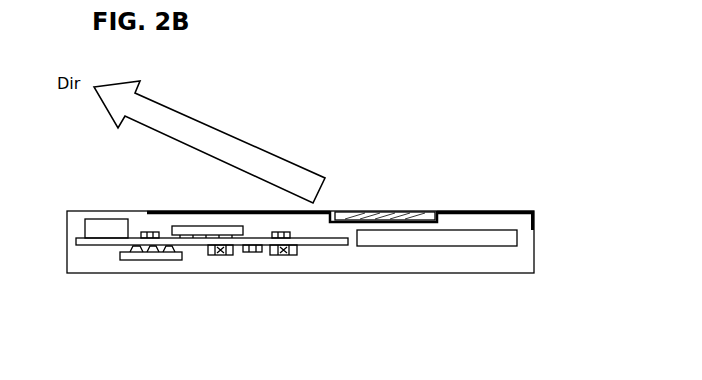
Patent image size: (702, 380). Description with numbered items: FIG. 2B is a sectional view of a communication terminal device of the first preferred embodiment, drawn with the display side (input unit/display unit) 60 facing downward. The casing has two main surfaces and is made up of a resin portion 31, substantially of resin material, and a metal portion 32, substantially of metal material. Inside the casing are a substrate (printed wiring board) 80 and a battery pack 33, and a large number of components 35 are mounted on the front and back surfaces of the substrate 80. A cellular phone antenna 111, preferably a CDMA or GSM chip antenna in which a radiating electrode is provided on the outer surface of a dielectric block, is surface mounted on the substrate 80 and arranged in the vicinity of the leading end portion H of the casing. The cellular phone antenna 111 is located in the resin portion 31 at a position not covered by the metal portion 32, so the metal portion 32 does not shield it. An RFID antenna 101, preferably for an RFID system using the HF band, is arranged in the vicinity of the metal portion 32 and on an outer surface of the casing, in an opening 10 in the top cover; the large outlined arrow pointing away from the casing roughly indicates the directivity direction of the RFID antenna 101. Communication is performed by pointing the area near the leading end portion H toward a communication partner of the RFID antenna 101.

The opening 10 is at (343, 210).
The RFID antenna 101 is at (398, 197).
The resin portion 31 is at (492, 265).
The metal portion 32 is at (480, 211).
The battery pack 33 is at (510, 238).
The components 35 is at (229, 255).
The display side 60 is at (180, 280).
The substrate 80 is at (321, 242).
The cellular phone antenna 111 is at (107, 228).
The leading end portion H is at (62, 257).